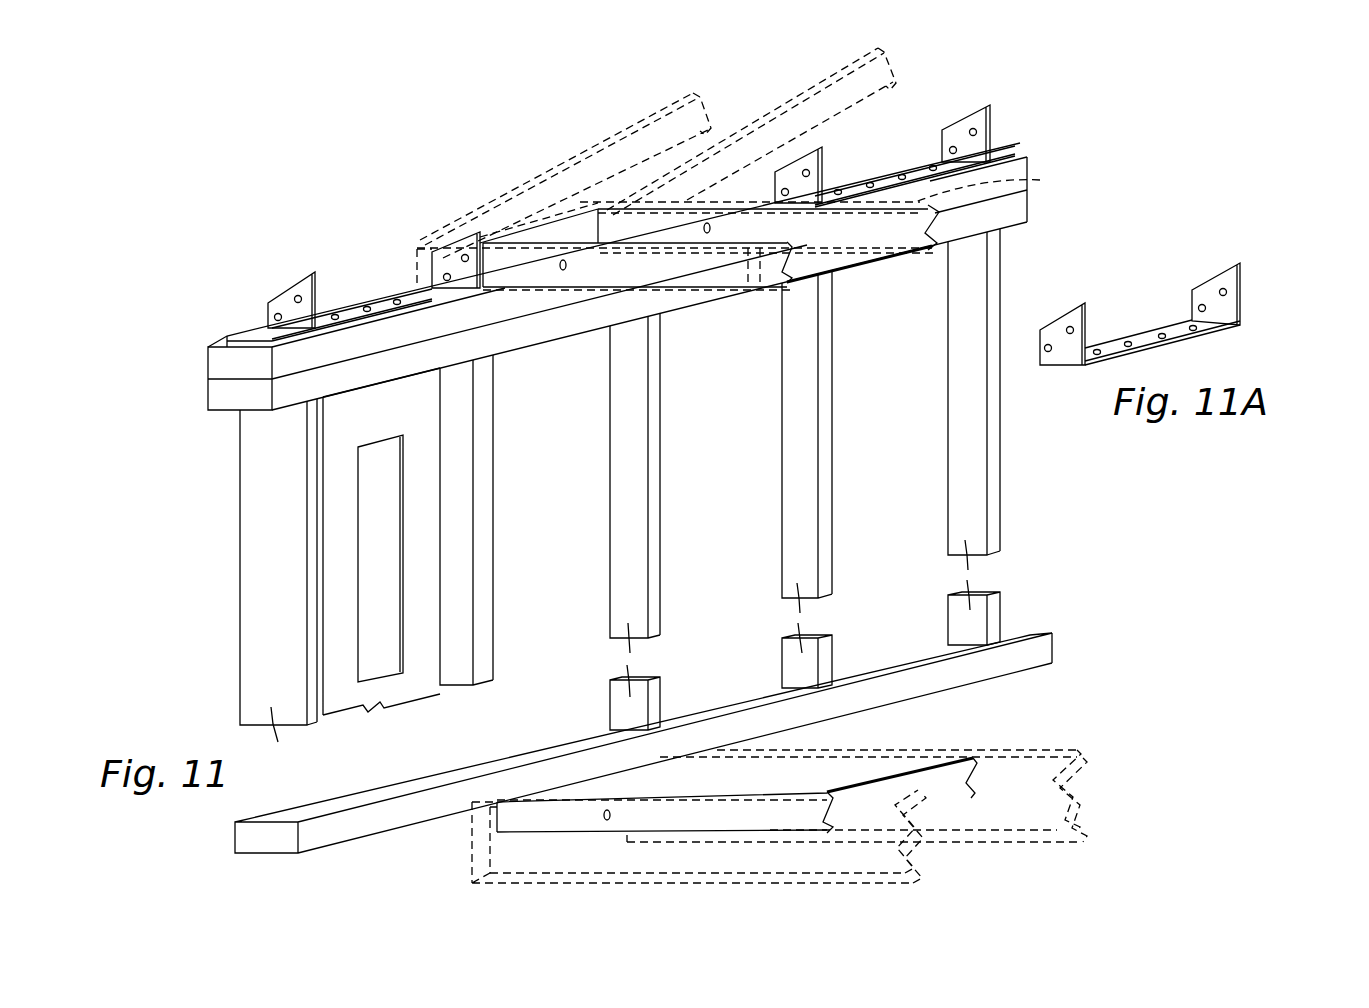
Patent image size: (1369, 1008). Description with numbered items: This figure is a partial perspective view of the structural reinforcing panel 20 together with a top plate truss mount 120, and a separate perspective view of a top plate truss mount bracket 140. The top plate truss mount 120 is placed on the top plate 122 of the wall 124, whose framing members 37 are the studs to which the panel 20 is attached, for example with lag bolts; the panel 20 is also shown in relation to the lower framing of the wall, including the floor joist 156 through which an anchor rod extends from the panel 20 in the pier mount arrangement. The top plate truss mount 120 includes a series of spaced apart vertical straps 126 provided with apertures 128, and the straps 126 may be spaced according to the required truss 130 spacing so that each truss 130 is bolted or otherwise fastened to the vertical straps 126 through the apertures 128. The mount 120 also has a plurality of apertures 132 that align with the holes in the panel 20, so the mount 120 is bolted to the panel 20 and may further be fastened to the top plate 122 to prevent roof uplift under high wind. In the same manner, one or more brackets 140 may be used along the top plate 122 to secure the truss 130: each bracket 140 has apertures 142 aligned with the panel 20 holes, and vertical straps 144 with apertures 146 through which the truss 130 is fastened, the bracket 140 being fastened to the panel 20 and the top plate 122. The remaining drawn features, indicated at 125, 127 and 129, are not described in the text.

In FIG. 11, the structural reinforcing panel 20 is at (843, 262).
In FIG. 11, the framing member 37 is at (262, 562).
In FIG. 11, the top plate truss mount 120 is at (459, 172).
In FIG. 11, the top plate 122 is at (217, 363).
In FIG. 11, the wall 124 is at (205, 480).
In FIG. 11, the wall section 125 is at (767, 333).
In FIG. 11, the vertical straps 126 is at (270, 300).
In FIG. 11, the hidden track 127 is at (1040, 180).
In FIG. 11, the apertures 128 is at (465, 255).
In FIG. 11, the bottom plate 129 is at (1030, 706).
In FIG. 11, the truss 130 is at (813, 80).
In FIG. 11, the apertures 132 is at (400, 290).
In FIG. 11, the floor joist 156 is at (1035, 750).
In FIG. 11A, the top plate truss mount bracket 140 is at (1173, 240).
In FIG. 11A, the apertures 142 is at (1130, 335).
In FIG. 11A, the vertical straps 144 is at (1240, 278).
In FIG. 11A, the apertures 146 is at (1202, 305).